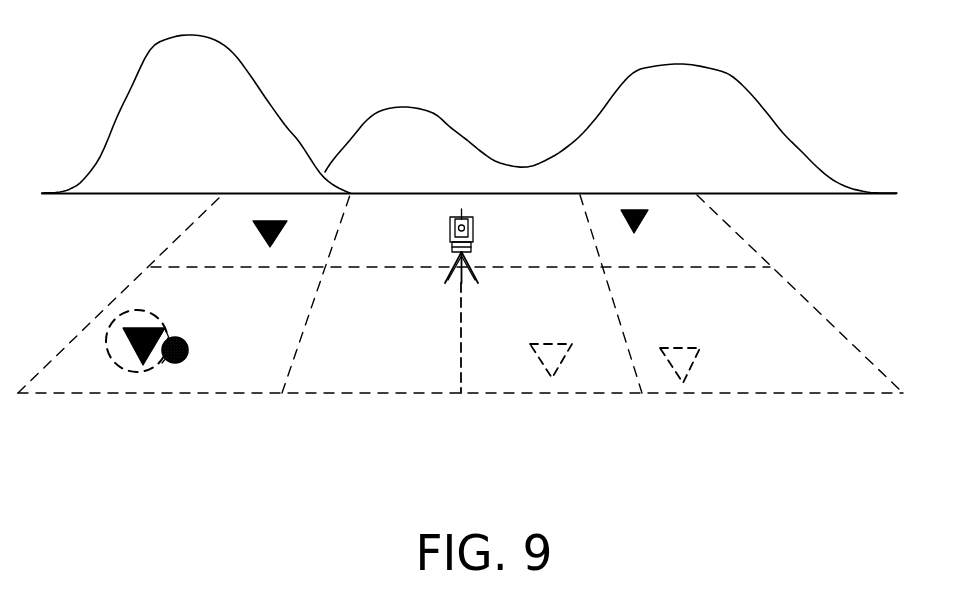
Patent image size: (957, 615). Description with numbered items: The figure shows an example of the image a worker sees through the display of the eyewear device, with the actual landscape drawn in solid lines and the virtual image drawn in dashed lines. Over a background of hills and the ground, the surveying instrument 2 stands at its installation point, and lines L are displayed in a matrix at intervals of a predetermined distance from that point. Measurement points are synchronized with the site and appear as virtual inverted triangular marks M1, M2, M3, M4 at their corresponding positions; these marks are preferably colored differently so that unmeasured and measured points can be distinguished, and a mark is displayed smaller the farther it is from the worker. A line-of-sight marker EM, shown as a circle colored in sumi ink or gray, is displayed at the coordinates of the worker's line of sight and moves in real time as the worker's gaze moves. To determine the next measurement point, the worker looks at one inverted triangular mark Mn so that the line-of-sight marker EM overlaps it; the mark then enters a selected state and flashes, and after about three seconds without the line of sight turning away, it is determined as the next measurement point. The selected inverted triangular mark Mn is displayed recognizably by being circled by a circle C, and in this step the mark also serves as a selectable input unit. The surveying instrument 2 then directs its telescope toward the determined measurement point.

The surveying instrument 2 is at (450, 208).
The inverted triangular mark M1 is at (266, 218).
The inverted triangular mark M2 is at (630, 207).
The inverted triangular mark M3 is at (681, 346).
The inverted triangular mark M4 is at (547, 343).
The inverted triangular mark Mn is at (131, 320).
The circle C is at (107, 342).
The line-of-sight marker EM is at (186, 361).
The line L is at (380, 394).